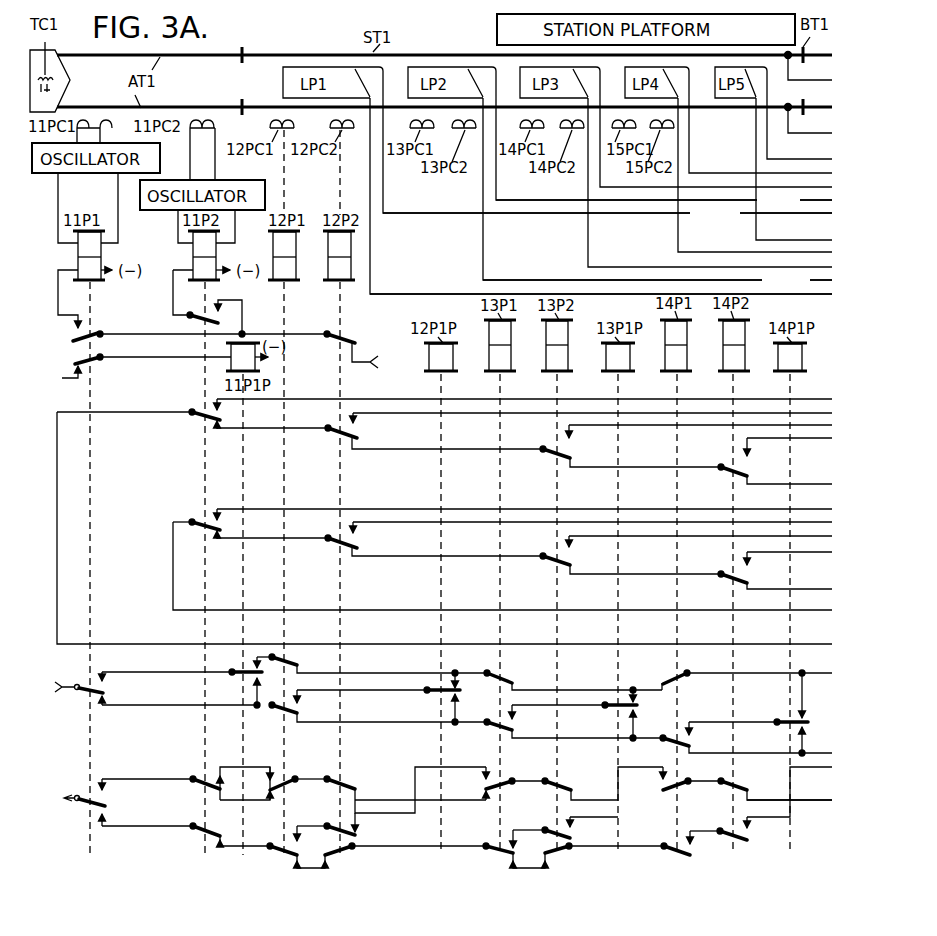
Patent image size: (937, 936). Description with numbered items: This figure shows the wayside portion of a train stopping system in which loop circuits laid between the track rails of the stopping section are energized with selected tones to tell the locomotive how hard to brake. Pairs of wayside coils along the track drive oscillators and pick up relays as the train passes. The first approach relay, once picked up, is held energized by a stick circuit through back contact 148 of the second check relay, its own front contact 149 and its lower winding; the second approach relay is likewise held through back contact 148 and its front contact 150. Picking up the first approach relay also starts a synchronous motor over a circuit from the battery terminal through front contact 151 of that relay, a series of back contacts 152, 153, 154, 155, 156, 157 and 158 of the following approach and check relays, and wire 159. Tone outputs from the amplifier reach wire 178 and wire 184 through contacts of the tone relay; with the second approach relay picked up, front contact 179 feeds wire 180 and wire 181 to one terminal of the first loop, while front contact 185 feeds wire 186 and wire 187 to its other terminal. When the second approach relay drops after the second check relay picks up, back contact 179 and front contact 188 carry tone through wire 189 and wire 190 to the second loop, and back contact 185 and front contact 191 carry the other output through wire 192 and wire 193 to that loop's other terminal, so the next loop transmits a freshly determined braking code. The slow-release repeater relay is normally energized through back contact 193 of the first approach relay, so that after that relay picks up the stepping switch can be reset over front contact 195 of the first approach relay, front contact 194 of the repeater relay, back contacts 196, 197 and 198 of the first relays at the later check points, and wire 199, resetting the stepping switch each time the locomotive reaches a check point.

The back contact of relay 12P2 148 is at (335, 345).
The front contact of relay 11P1 149 is at (93, 333).
The front contact of relay 11P2 150 is at (202, 300).
The front contact of relay 11P1 151 is at (80, 808).
The back contact of relay 11P2 152 is at (197, 776).
The back contact of relay 12P1 153 is at (286, 775).
The back contact of relay 12P2 154 is at (343, 777).
The back contact of relay 13P1 155 is at (492, 787).
The back contact of relay 13P2 156 is at (560, 785).
The back contact of relay 14P1 157 is at (681, 786).
The back contact of relay 14P2 158 is at (736, 780).
The wire 159 is at (815, 801).
The wire 178 is at (794, 611).
The contact of relay 11P2 179 is at (203, 519).
The wire 180 is at (810, 502).
The wire 181 is at (806, 296).
The wire 184 is at (797, 643).
The contact of relay 11P2 185 is at (191, 420).
The wire 186 is at (812, 392).
The wire 187 is at (607, 213).
The front contact of relay 12P2 188 is at (336, 549).
The wire 189 is at (748, 521).
The wire 190 is at (657, 281).
The front contact of relay 12P2 191 is at (338, 440).
The wire 192 is at (757, 412).
The wire / back contact of relay 11P1 193 is at (93, 360).
The front contact of relay 11P1P 194 is at (233, 679).
The front contact of relay 11P1 195 is at (78, 698).
The back contact of relay 12P1 196 is at (292, 661).
The back contact of relay 13P1 197 is at (505, 678).
The back contact of relay 14P1 198 is at (672, 680).
The wire 199 is at (759, 703).